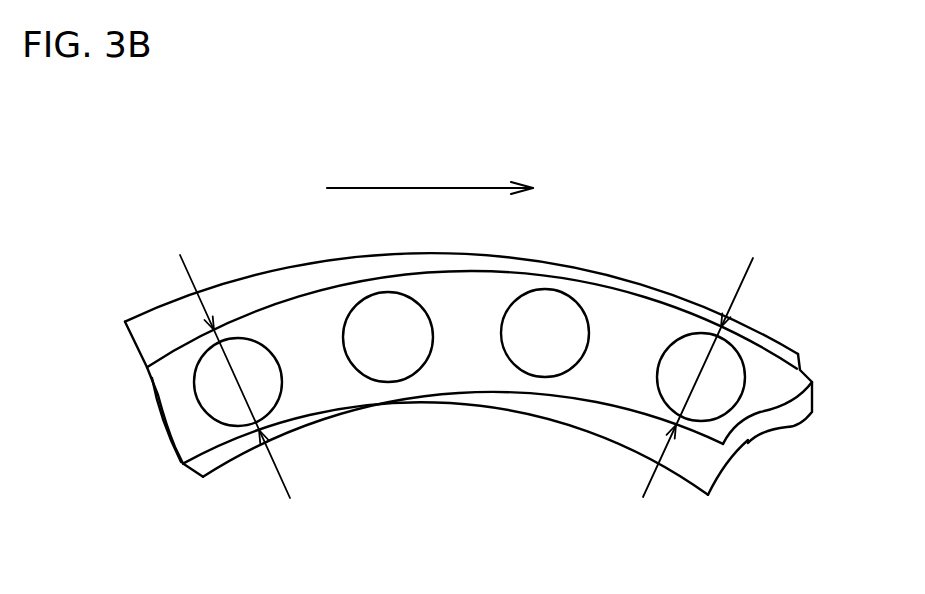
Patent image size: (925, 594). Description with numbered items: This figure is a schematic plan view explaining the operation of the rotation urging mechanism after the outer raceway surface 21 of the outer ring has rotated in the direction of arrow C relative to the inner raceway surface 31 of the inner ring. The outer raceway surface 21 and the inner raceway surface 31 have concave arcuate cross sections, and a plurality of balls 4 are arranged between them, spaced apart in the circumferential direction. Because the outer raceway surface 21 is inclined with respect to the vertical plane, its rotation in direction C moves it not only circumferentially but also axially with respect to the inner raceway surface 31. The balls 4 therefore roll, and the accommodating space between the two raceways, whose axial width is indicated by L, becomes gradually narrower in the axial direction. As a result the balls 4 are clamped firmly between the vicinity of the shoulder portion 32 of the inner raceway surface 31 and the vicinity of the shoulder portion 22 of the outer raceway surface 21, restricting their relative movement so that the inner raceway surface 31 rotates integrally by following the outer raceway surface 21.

The balls 4 is at (267, 393).
The outer raceway surface 21 is at (772, 347).
The shoulder portion 22 is at (303, 296).
The inner raceway surface 31 is at (240, 297).
The shoulder portion 32 is at (688, 308).
The direction of arrow C is at (427, 187).
The axial width of the accommodating space L is at (238, 382).